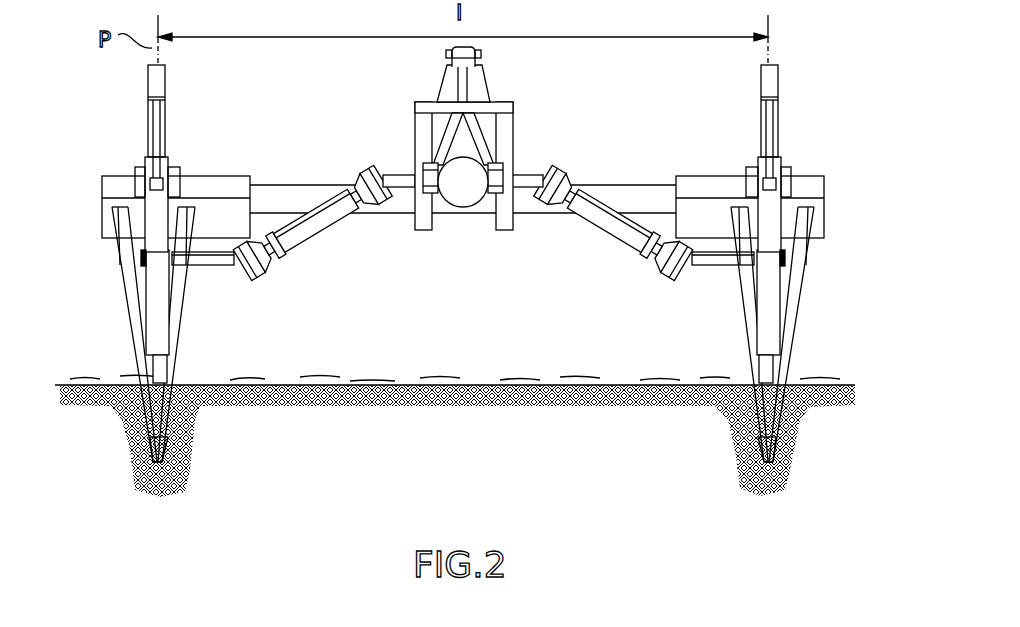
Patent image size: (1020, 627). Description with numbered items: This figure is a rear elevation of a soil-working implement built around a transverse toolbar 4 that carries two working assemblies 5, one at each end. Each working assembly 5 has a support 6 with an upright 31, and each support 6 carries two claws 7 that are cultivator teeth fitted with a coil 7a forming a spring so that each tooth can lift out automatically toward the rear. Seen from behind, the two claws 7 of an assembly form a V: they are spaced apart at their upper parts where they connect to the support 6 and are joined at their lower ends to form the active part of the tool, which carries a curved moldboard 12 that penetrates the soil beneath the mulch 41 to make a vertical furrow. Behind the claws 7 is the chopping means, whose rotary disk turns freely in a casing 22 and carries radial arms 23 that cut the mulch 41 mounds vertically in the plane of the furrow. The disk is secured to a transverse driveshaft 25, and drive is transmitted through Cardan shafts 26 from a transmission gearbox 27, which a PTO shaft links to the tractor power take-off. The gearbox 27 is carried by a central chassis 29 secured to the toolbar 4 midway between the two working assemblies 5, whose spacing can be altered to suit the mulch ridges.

The transverse toolbar 4 is at (311, 197).
The working assembly 5 is at (127, 150).
The support 6 is at (236, 160).
The claw 7 is at (190, 317).
The coil 7a is at (141, 258).
The curved moldboard 12 is at (160, 450).
The casing 22 is at (160, 303).
The radial arm 23 is at (167, 362).
The transverse driveshaft 25 is at (250, 281).
The Cardan shaft 26 is at (318, 228).
The transmission gearbox 27 is at (466, 197).
The central chassis 29 is at (507, 122).
The upright 31 is at (162, 85).
The mulch 41 is at (460, 385).